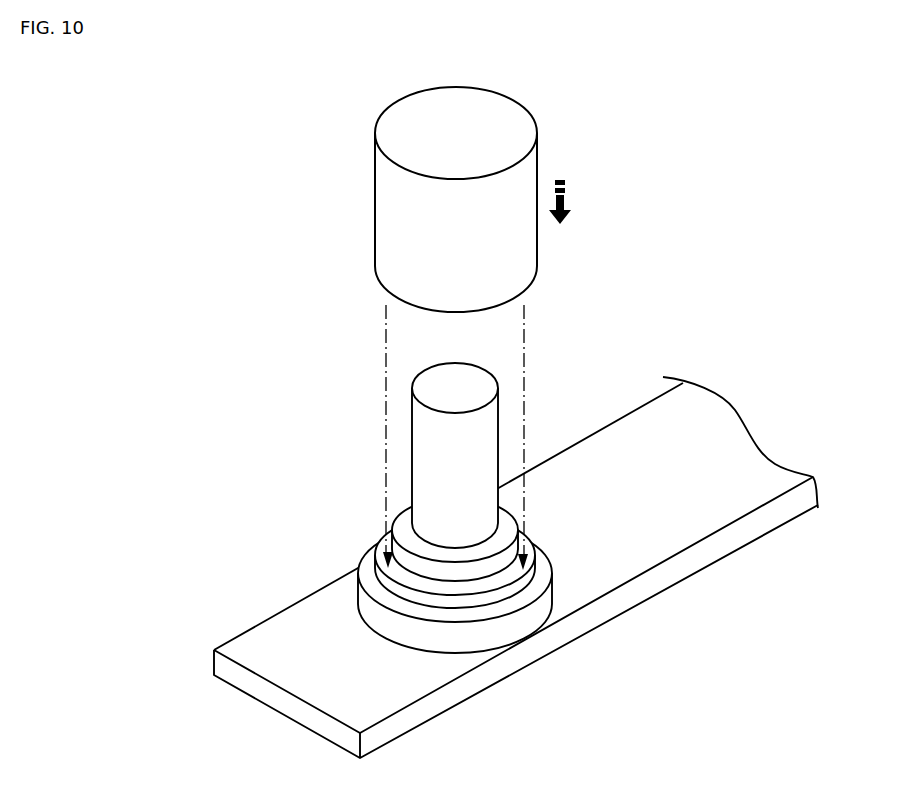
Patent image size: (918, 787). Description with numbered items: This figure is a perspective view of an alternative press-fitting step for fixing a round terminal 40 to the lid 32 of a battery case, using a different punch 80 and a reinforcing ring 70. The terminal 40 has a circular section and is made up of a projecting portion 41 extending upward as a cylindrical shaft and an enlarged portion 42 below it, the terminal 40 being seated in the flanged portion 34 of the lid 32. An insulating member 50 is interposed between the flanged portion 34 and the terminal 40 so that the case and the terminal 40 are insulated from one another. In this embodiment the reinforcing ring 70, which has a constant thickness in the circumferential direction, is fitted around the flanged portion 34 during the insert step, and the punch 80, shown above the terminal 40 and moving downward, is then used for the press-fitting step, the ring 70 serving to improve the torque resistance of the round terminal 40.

The lid 32 is at (252, 648).
The flanged portion 34 is at (390, 581).
The terminal 40 is at (493, 462).
The projecting portion 41 is at (494, 462).
The enlarged portion 42 is at (513, 542).
The insulating member 50 is at (512, 584).
The reinforcing ring 70 is at (380, 618).
The punch 80 is at (362, 202).